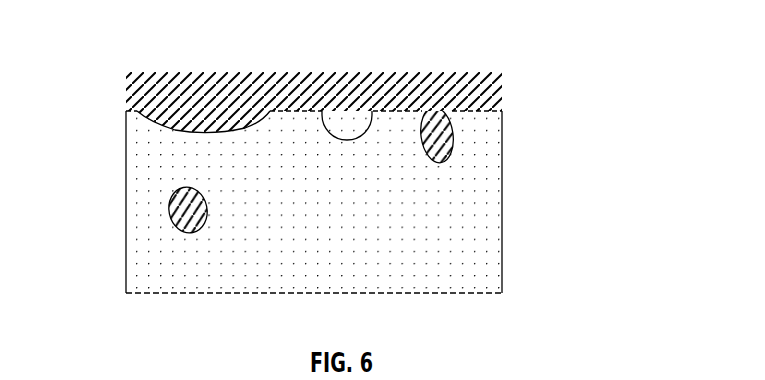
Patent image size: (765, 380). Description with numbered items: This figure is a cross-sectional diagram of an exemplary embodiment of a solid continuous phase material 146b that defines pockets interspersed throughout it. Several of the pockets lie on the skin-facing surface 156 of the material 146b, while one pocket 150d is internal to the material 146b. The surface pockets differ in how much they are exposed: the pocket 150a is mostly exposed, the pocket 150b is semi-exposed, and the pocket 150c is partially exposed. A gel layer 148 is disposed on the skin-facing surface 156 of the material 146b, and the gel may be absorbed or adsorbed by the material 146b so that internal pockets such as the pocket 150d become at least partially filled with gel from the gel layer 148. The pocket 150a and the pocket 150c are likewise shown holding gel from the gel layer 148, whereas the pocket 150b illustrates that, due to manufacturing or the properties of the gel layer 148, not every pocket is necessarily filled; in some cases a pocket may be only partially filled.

The material 146b is at (559, 91).
The gel layer 148 is at (125, 90).
The skin-facing surface 156 is at (290, 111).
The pocket 150a is at (154, 123).
The pocket 150b is at (347, 122).
The pocket 150c is at (458, 133).
The pocket 150d is at (188, 238).